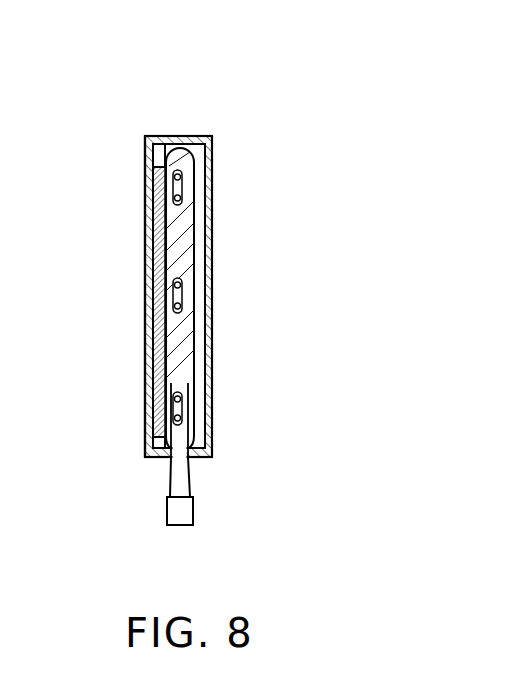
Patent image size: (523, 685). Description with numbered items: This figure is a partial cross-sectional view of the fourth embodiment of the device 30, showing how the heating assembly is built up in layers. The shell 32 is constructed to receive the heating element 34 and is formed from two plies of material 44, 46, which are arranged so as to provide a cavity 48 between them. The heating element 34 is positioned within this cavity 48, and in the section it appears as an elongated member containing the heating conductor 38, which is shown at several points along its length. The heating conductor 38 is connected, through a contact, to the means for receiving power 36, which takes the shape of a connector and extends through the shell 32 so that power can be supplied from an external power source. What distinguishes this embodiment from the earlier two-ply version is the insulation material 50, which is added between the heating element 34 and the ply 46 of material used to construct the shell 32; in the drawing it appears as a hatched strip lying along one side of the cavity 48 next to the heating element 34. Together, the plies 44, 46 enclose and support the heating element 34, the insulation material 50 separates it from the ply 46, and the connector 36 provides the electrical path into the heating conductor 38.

The lamp assembly 30 is at (242, 280).
The shell 32 is at (224, 195).
The heating element 34 is at (185, 343).
The means for receiving power 36 is at (194, 512).
The heating conductor 38 is at (185, 407).
The ply of material 44 is at (211, 156).
The ply of material 46 is at (145, 253).
The cavity 48 is at (204, 142).
The insulation material 50 is at (146, 193).